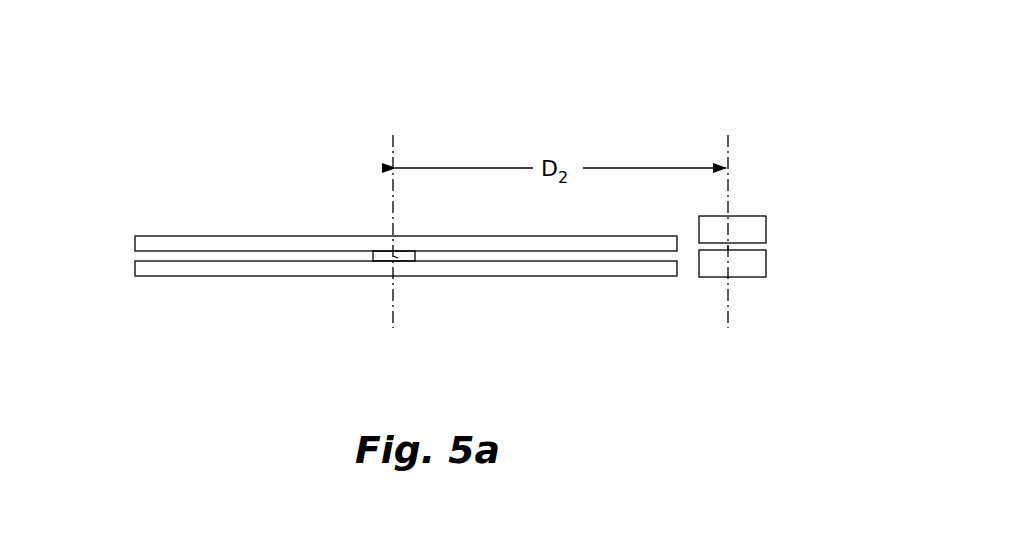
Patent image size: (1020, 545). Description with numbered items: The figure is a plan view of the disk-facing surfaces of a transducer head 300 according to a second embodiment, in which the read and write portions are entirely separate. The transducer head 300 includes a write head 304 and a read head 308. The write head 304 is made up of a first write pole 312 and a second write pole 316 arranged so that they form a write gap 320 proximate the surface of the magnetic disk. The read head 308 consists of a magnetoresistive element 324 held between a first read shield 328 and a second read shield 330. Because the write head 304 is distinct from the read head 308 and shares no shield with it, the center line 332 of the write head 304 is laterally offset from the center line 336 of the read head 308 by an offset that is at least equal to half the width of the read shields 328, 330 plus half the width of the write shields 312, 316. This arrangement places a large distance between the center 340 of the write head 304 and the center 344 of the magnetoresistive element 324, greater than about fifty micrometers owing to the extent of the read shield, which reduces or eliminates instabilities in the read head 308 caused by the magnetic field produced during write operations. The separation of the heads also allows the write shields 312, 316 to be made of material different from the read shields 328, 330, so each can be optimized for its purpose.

The transducer head 300 is at (412, 137).
The write head 304 is at (745, 202).
The read head 308 is at (235, 220).
The first write pole 312 is at (757, 233).
The second write pole 316 is at (752, 269).
The write gap 320 is at (772, 246).
The magnetoresistive element 324 is at (388, 261).
The first read shield 328 is at (157, 247).
The second read shield 330 is at (167, 268).
The center line of the write head 332 is at (730, 147).
The center line of the read head 336 is at (392, 148).
The center of the write head 340 is at (728, 248).
The center of the magnetoresistive element 344 is at (397, 257).